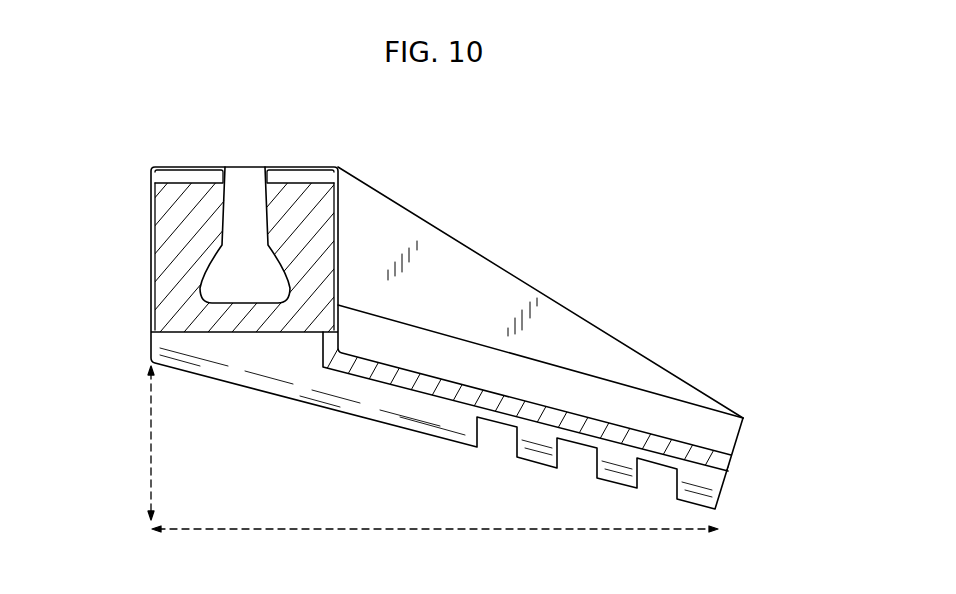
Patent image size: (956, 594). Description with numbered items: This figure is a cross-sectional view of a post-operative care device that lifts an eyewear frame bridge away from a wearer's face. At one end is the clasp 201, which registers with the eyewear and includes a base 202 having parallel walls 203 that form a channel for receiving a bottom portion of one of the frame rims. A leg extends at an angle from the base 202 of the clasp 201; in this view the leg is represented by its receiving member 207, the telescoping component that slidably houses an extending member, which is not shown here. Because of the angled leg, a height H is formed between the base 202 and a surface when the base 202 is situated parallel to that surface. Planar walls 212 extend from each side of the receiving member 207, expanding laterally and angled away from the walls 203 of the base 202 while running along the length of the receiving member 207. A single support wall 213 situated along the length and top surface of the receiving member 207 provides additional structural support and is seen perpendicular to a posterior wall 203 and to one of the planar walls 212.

The clasp 201 is at (128, 290).
The base 202 is at (242, 302).
The parallel walls 203 is at (190, 167).
The receiving member 207 is at (483, 343).
The planar walls 212 is at (622, 428).
The support wall 213 is at (472, 250).